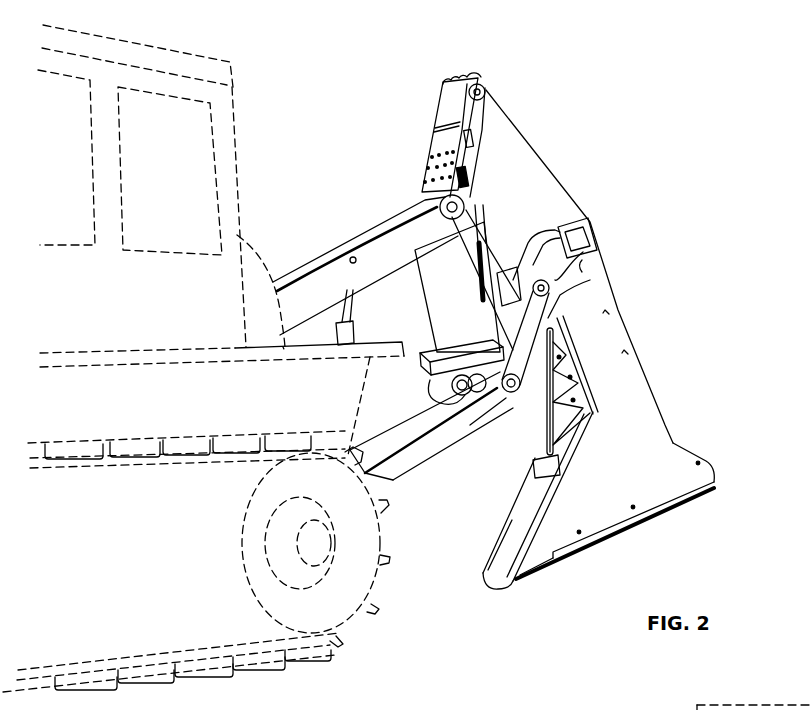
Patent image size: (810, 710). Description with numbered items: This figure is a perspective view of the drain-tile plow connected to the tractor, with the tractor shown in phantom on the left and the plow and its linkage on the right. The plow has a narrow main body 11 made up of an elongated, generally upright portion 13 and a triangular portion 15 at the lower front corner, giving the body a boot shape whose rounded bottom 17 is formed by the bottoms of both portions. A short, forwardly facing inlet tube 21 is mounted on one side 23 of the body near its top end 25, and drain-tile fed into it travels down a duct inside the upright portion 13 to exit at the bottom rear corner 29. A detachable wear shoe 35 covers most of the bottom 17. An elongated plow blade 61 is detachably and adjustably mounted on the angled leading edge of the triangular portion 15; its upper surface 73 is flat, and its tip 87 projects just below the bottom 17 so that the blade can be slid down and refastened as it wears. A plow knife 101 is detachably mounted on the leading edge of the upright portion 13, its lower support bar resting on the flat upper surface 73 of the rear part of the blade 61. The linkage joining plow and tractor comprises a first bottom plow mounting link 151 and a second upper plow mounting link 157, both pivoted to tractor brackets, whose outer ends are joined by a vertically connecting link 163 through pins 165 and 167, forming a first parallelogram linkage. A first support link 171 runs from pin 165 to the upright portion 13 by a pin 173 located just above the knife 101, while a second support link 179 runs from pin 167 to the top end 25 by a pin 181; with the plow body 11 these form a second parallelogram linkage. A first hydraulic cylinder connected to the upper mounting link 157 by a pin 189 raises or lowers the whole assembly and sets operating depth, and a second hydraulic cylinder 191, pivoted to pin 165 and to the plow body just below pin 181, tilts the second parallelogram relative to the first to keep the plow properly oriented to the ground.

The main body 11 is at (669, 415).
The upright portion 13 is at (606, 315).
The triangular portion 15 is at (600, 516).
The bottom 17 is at (524, 576).
The inlet tube 21 is at (592, 226).
The side 23 is at (624, 353).
The top end 25 is at (474, 74).
The bottom rear corner 29 is at (712, 481).
The wear shoe 35 is at (678, 508).
The plow blade 61 is at (515, 499).
The upper surface 73 is at (499, 554).
The tip 87 is at (493, 589).
The plow knife 101 is at (541, 431).
The first bottom plow mounting link 151 is at (420, 467).
The second upper plow mounting link 157 is at (382, 219).
The vertically connecting link 163 is at (427, 293).
The pin 165 is at (510, 394).
The pin 167 is at (463, 208).
The first support link 171 is at (560, 378).
The pin 173 is at (552, 288).
The second support link 179 is at (433, 140).
The pin 181 is at (487, 90).
The pin 189 is at (354, 331).
The second hydraulic cylinder 191 is at (485, 245).